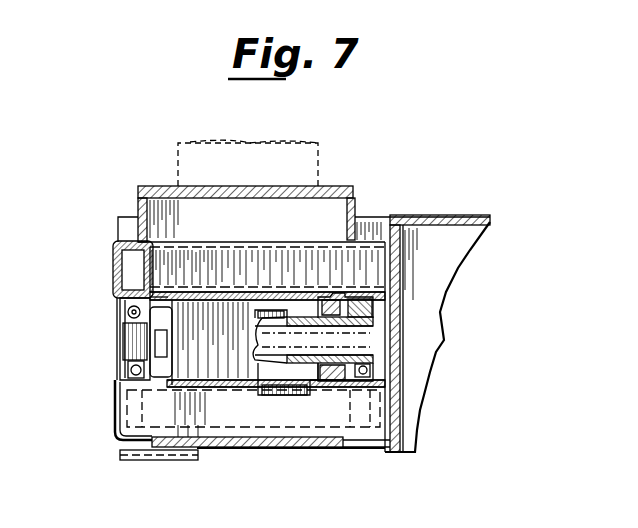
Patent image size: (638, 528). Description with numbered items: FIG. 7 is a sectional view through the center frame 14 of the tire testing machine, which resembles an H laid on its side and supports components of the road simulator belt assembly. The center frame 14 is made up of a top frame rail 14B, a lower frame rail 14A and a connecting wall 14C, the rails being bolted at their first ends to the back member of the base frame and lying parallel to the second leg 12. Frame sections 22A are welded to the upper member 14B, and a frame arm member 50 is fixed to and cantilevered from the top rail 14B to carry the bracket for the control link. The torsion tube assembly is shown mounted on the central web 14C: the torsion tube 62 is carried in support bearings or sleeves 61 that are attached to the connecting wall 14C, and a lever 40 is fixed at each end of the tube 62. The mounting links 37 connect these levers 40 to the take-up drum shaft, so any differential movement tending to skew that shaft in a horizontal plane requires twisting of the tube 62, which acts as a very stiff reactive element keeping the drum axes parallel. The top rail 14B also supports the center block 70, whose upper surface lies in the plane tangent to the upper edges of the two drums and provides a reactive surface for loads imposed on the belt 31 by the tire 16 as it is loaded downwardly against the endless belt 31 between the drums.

The tire 16 is at (318, 143).
The belt 31 is at (165, 186).
The center block 70 is at (350, 192).
The top frame rail 14B is at (303, 257).
The second leg 12 is at (122, 230).
The frame arm member 50 is at (118, 276).
The links 37 is at (120, 305).
The levers 40 is at (128, 325).
The torsion tube 62 is at (123, 338).
The frame sections 22A is at (123, 373).
The support bearings or sleeves 61 is at (156, 380).
The center frame 14 is at (110, 440).
The lower frame rail 14A is at (237, 417).
The connecting wall 14C is at (240, 345).